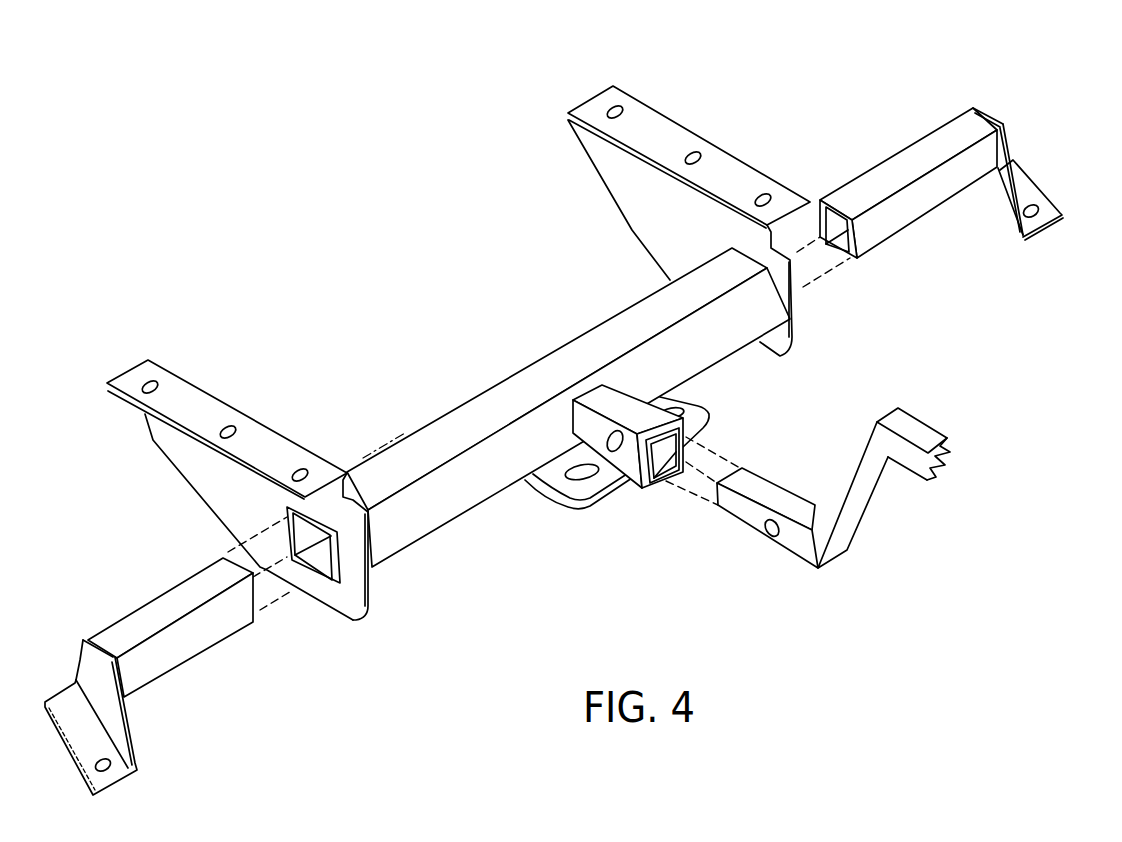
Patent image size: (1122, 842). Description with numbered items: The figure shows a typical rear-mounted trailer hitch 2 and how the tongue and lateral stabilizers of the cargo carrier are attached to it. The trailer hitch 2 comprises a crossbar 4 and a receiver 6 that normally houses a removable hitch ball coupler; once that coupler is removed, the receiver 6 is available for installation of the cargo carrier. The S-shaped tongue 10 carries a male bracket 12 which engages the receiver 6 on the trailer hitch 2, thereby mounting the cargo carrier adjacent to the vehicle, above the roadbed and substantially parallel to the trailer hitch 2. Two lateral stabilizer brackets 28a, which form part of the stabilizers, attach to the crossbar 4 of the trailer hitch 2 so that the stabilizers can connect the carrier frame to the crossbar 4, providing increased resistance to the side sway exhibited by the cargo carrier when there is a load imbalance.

The trailer hitch 2 is at (499, 362).
The crossbar 4 is at (420, 520).
The receiver 6 is at (662, 449).
The S-shaped tongue 10 is at (922, 427).
The male bracket 12 is at (718, 490).
The lateral stabilizer brackets 28a is at (910, 210).